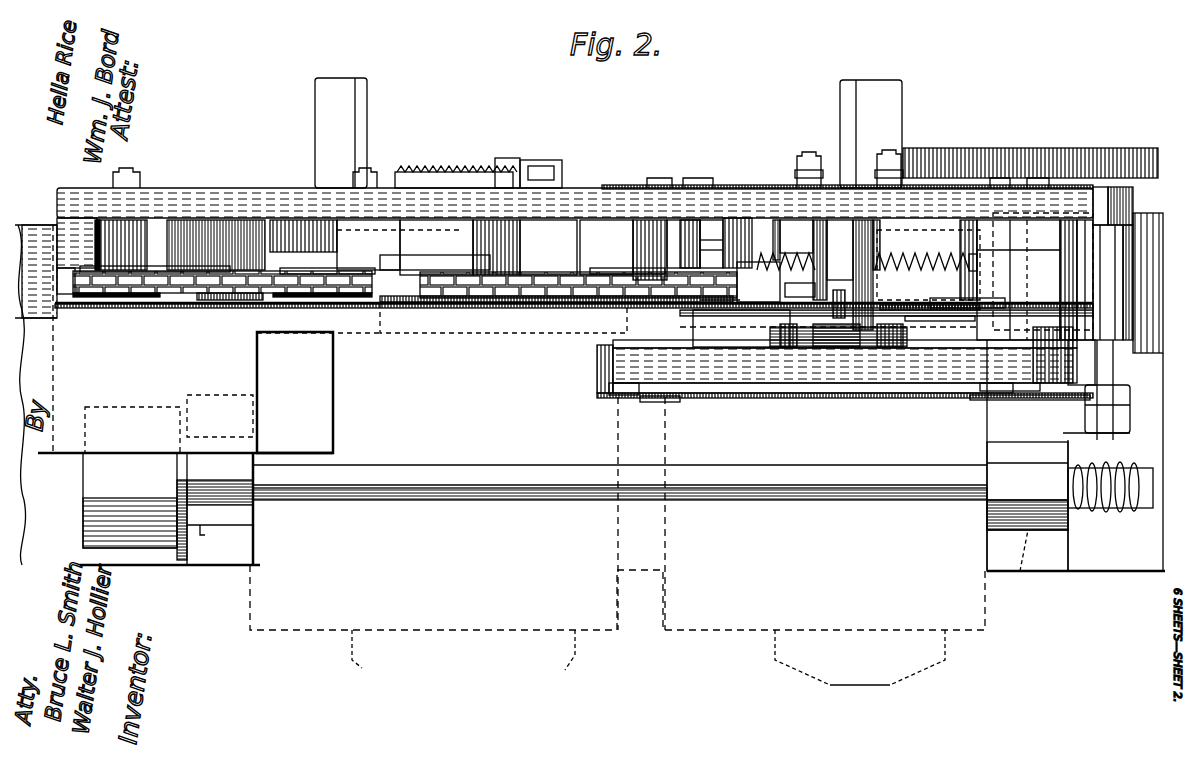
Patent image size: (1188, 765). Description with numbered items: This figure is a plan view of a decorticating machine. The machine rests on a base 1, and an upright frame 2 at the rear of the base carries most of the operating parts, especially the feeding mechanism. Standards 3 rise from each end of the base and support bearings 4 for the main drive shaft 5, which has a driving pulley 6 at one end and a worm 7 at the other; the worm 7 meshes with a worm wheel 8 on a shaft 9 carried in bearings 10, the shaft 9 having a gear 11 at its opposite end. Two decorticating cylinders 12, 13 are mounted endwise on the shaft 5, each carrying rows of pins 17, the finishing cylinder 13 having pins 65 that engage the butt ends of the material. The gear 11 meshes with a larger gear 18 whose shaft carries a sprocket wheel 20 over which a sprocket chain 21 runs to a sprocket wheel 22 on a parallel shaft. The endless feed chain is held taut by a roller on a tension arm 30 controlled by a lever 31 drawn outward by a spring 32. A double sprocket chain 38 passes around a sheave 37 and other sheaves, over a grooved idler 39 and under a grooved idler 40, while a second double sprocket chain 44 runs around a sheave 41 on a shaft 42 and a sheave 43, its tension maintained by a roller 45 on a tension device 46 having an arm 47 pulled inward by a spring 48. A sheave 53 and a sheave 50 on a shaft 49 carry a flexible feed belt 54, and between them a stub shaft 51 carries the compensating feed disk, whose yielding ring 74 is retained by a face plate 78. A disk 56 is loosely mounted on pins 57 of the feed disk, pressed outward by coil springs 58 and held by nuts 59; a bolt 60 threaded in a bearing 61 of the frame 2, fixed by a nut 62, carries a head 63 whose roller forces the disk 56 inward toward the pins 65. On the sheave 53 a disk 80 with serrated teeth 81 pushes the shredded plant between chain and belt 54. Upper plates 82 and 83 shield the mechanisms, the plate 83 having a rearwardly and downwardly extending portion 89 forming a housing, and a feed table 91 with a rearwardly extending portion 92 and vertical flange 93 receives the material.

The base 1 is at (157, 565).
The upright frame 2 is at (575, 205).
The standards 3 is at (255, 525).
The bearings 4 is at (255, 478).
The main drive shaft 5 is at (728, 490).
The driving pulley 6 is at (130, 500).
The worm 7 is at (1112, 510).
The worm wheel 8 is at (1018, 567).
The shaft 9 is at (1100, 345).
The bearings 10 is at (1133, 208).
The gear 11 is at (1143, 148).
The decorticating cylinder 12 is at (617, 530).
The finishing cylinder 13 is at (860, 657).
The pins 17 is at (463, 663).
The gear 18 is at (935, 160).
The sprocket wheel 20 is at (1100, 325).
The sprocket chain 21 is at (930, 296).
The sprocket wheel 22 is at (620, 350).
The tension arm 30 is at (758, 282).
The lever 31 is at (737, 258).
The spring 32 is at (925, 310).
The sheave 37 is at (729, 303).
The double sprocket chain 38 is at (741, 310).
The grooved idler 39 is at (327, 262).
The grooved idler 40 is at (500, 310).
The sheave 41 is at (170, 300).
The shaft 42 is at (120, 300).
The sheave 43 is at (652, 278).
The double sprocket chain 44 is at (535, 300).
The roller 45 is at (555, 314).
The tension device 46 is at (433, 262).
The arm 47 is at (510, 164).
The spring 48 is at (460, 180).
The shaft 49 is at (1020, 400).
The sheave 50 is at (1010, 395).
The stub shaft 51 is at (830, 398).
The sheave 53 is at (610, 350).
The feed belt 54 is at (765, 385).
The disk 56 is at (976, 315).
The pins 57 is at (838, 308).
The coil springs 58 is at (825, 345).
The nuts 59 is at (827, 302).
The bolt 60 is at (875, 170).
The bearing 61 is at (867, 250).
The nut 62 is at (797, 183).
The head 63 is at (940, 310).
The pins 65 is at (860, 692).
The ring 74 is at (845, 361).
The face plate 78 is at (886, 384).
The disk 80 is at (622, 395).
The teeth 81 is at (648, 398).
The upper plate 82 is at (194, 397).
The upper plate 83 is at (718, 398).
The rearwardly and downwardly extending portion 89 is at (728, 185).
The feed table 91 is at (185, 392).
The rearwardly extending portion 92 is at (46, 278).
The flange 93 is at (57, 232).